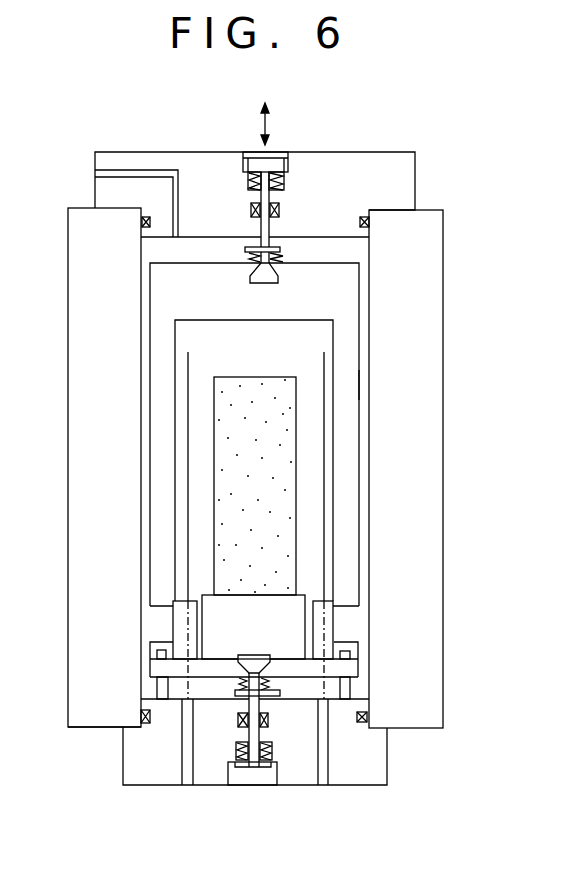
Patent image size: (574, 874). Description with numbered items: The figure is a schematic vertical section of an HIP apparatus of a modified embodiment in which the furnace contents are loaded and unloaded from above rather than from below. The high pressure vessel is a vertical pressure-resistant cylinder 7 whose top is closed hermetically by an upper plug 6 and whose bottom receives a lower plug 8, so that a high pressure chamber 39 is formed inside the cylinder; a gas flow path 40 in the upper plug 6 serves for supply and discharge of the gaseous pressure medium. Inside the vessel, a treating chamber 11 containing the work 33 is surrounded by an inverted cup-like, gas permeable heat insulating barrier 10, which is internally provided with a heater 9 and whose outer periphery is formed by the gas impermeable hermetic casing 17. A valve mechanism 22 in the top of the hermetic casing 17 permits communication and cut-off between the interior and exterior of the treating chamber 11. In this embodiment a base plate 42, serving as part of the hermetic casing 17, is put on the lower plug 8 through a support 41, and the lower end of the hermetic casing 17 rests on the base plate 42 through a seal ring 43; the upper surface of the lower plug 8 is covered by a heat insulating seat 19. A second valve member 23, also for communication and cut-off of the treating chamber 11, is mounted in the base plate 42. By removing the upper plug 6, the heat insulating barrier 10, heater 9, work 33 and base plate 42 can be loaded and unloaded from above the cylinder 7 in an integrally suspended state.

The upper plug 6 is at (370, 170).
The pressure-resistant cylinder 7 is at (88, 417).
The lower plug 8 is at (210, 786).
The heater 9 is at (325, 448).
The heat insulating barrier 10 is at (350, 382).
The treating chamber 11 is at (236, 327).
The hermetic casing 17 is at (361, 552).
The heat insulating seat 19 is at (212, 625).
The valve mechanism 22 is at (266, 287).
The valve member 23 is at (253, 654).
The work 33 is at (232, 390).
The high pressure chamber 39 is at (150, 254).
The gas flow path 40 is at (141, 170).
The support 41 is at (350, 692).
The base plate 42 is at (297, 674).
The seal ring 43 is at (153, 654).